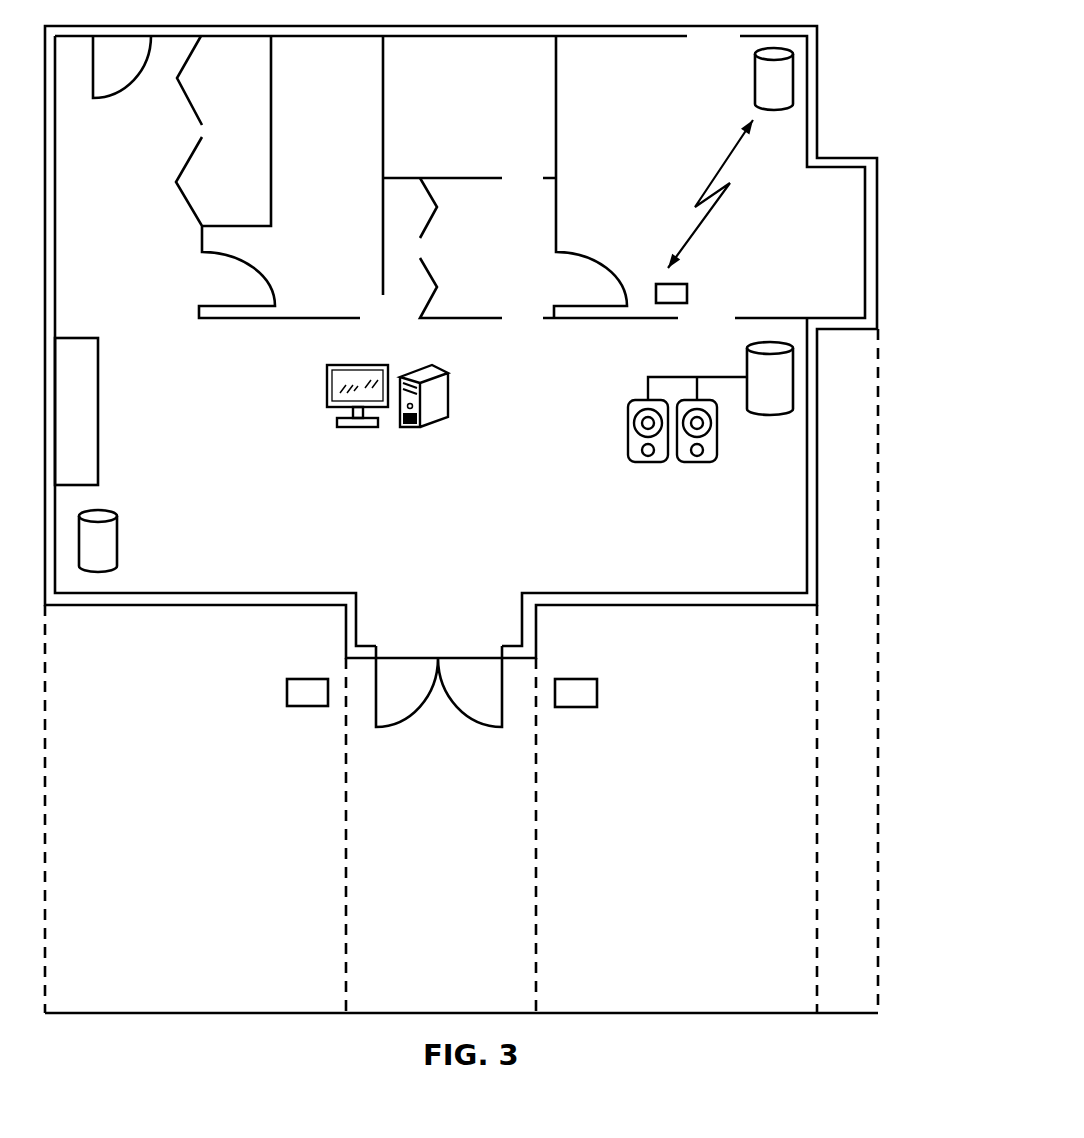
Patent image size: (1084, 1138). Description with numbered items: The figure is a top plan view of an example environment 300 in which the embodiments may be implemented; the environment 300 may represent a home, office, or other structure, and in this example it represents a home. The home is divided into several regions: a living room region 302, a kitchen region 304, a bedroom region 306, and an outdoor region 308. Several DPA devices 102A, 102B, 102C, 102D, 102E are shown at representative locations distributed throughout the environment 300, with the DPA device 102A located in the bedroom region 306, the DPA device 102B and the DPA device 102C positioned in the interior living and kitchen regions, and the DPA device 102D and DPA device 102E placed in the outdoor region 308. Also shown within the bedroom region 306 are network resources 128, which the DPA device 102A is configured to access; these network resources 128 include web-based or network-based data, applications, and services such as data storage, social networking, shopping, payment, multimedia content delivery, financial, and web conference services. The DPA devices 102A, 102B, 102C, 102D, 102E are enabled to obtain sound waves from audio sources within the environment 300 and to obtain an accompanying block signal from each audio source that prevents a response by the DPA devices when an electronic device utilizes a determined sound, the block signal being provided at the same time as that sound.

The environment 300 is at (880, 92).
The living room region 302 is at (233, 428).
The kitchen region 304 is at (698, 556).
The bedroom region 306 is at (666, 180).
The outdoor region 308 is at (705, 960).
The DPA device 102A is at (755, 88).
The DPA device 102B is at (747, 365).
The DPA device 102C is at (118, 540).
The DPA device 102D is at (287, 690).
The DPA device 102E is at (598, 692).
The network resources 128 is at (680, 284).